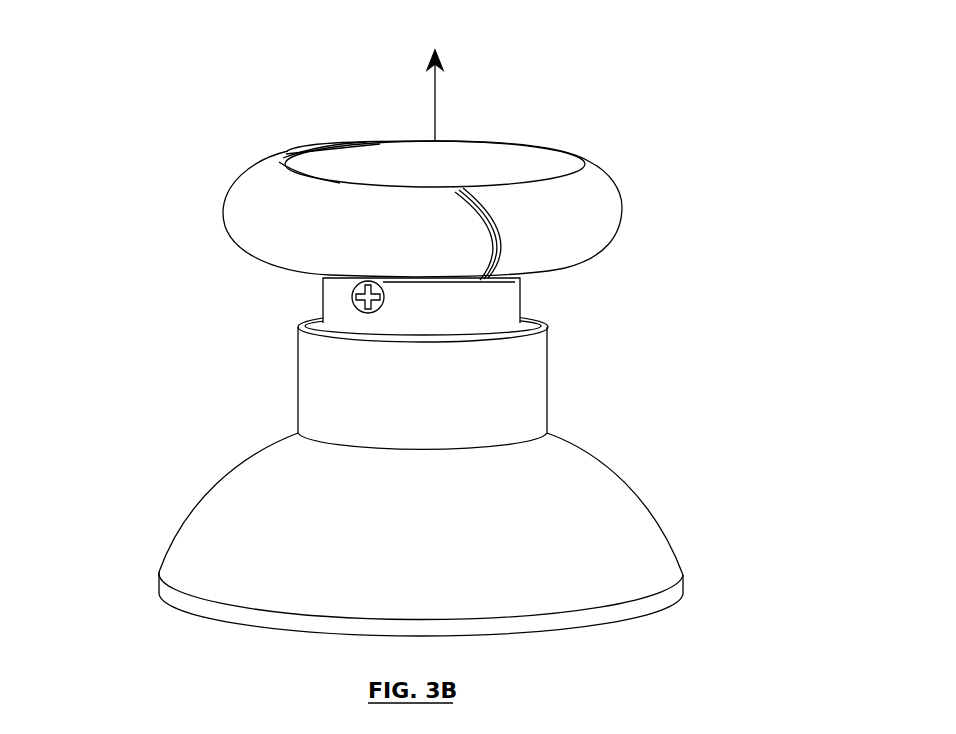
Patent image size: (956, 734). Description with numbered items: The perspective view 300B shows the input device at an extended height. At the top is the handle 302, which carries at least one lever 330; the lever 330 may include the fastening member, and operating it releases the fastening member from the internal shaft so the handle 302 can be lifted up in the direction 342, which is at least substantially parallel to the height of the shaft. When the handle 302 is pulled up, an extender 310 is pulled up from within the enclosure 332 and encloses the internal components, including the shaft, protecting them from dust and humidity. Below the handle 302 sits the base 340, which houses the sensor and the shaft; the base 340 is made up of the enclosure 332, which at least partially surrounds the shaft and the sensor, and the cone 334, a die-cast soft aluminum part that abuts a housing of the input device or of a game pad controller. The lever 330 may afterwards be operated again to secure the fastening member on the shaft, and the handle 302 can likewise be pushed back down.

The perspective view 300B is at (689, 99).
The handle 302 is at (218, 201).
The extender 310 is at (523, 293).
The lever 330 is at (323, 142).
The enclosure 332 is at (297, 370).
The cone 334 is at (647, 517).
The base 340 is at (128, 320).
The direction 342 is at (438, 102).